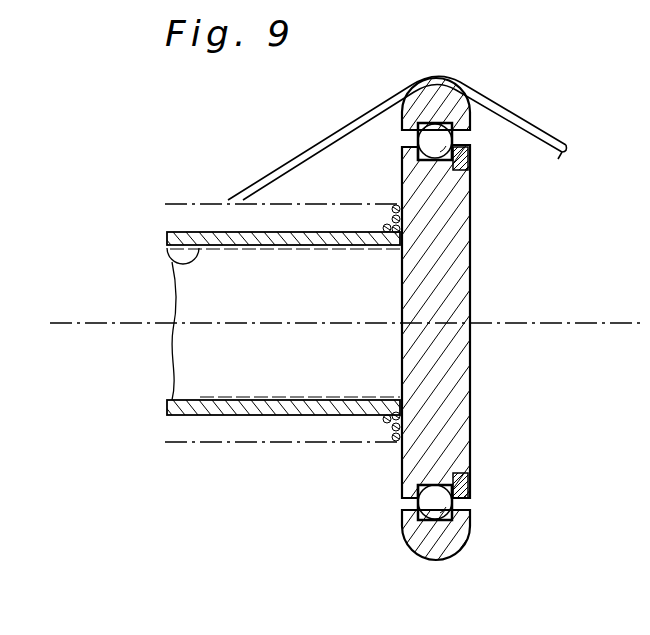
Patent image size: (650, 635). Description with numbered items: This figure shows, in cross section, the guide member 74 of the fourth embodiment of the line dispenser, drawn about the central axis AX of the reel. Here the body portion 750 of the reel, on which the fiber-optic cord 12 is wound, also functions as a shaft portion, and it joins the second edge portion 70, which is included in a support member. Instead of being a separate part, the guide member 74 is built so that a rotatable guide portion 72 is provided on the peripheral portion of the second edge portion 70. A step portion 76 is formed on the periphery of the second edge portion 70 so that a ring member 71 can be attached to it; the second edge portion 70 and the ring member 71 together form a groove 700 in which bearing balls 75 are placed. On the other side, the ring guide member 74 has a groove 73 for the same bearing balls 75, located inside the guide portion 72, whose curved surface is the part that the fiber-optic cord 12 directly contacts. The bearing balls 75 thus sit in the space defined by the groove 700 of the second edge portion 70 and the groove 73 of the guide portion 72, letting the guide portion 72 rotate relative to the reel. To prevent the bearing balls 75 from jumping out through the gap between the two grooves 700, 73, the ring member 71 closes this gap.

The fiber-optic cord 12 is at (548, 134).
The second edge portion 70 is at (460, 283).
The ring member 71 is at (468, 160).
The guide portion 72 is at (450, 103).
The groove 73 is at (423, 116).
The guide member 74 is at (478, 513).
The bearing balls 75 is at (433, 140).
The step portion 76 is at (464, 181).
The groove 700 is at (425, 169).
The body portion 750 is at (172, 264).
The axis AX is at (78, 322).